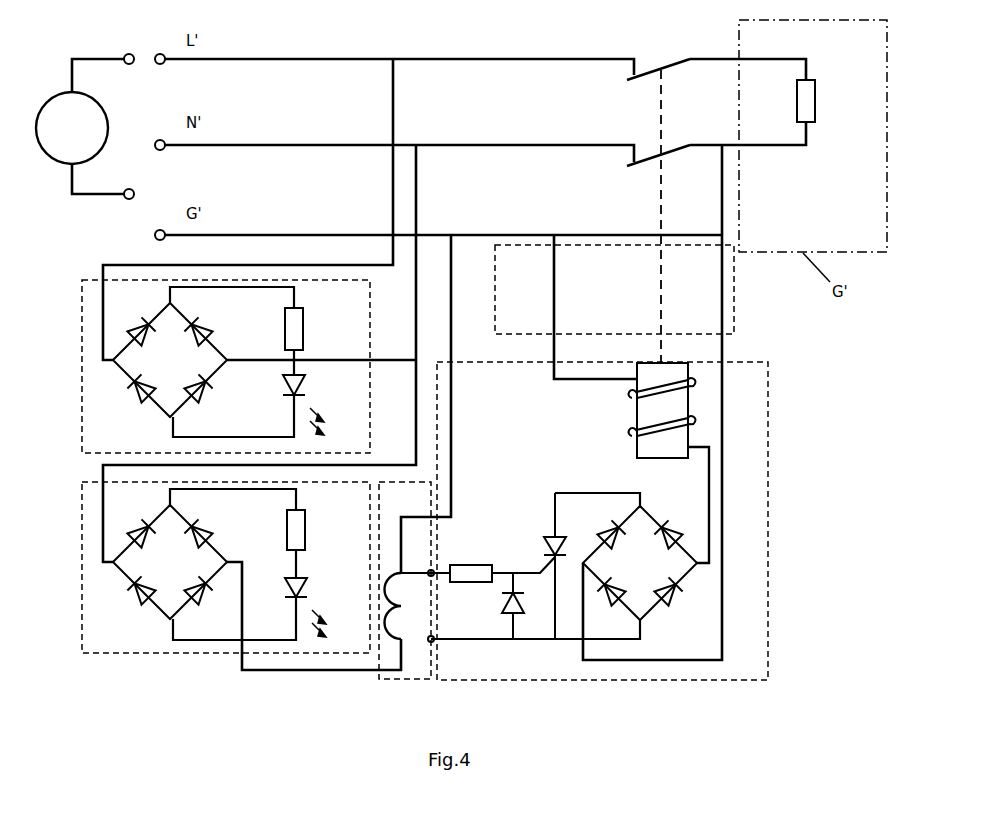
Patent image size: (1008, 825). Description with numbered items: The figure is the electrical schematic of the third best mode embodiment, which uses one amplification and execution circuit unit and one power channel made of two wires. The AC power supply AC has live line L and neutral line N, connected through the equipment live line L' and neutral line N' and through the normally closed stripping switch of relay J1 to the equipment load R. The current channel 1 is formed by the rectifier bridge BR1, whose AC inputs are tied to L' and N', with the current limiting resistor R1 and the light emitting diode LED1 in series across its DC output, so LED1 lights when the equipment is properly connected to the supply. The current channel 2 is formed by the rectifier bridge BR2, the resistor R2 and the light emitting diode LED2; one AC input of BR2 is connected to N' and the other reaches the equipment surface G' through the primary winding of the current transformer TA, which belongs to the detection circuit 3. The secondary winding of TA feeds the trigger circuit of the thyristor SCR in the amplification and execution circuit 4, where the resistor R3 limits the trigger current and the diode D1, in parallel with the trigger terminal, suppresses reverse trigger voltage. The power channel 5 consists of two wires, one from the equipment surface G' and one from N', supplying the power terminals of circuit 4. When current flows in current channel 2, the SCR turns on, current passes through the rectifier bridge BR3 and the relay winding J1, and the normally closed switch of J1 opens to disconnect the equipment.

The current channel 1 is at (100, 403).
The current channel 2 is at (98, 622).
The detection circuit 3 is at (407, 670).
The amplification and execution circuit 4 is at (755, 528).
The power channel 5 is at (517, 322).
The AC power supply AC is at (85, 115).
The equipment load R is at (816, 101).
The current limiting resistor R1 is at (312, 329).
The resistor R2 is at (313, 530).
The resistor R3 is at (471, 560).
The rectifier bridge BR1 is at (189, 360).
The rectifier bridge BR2 is at (189, 562).
The rectifier bridge BR3 is at (646, 573).
The light emitting diode LED1 is at (317, 405).
The light emitting diode LED2 is at (319, 607).
The current transformer TA is at (403, 606).
The diode D1 is at (512, 622).
The thyristor SCR is at (555, 582).
The relay J1 is at (669, 463).